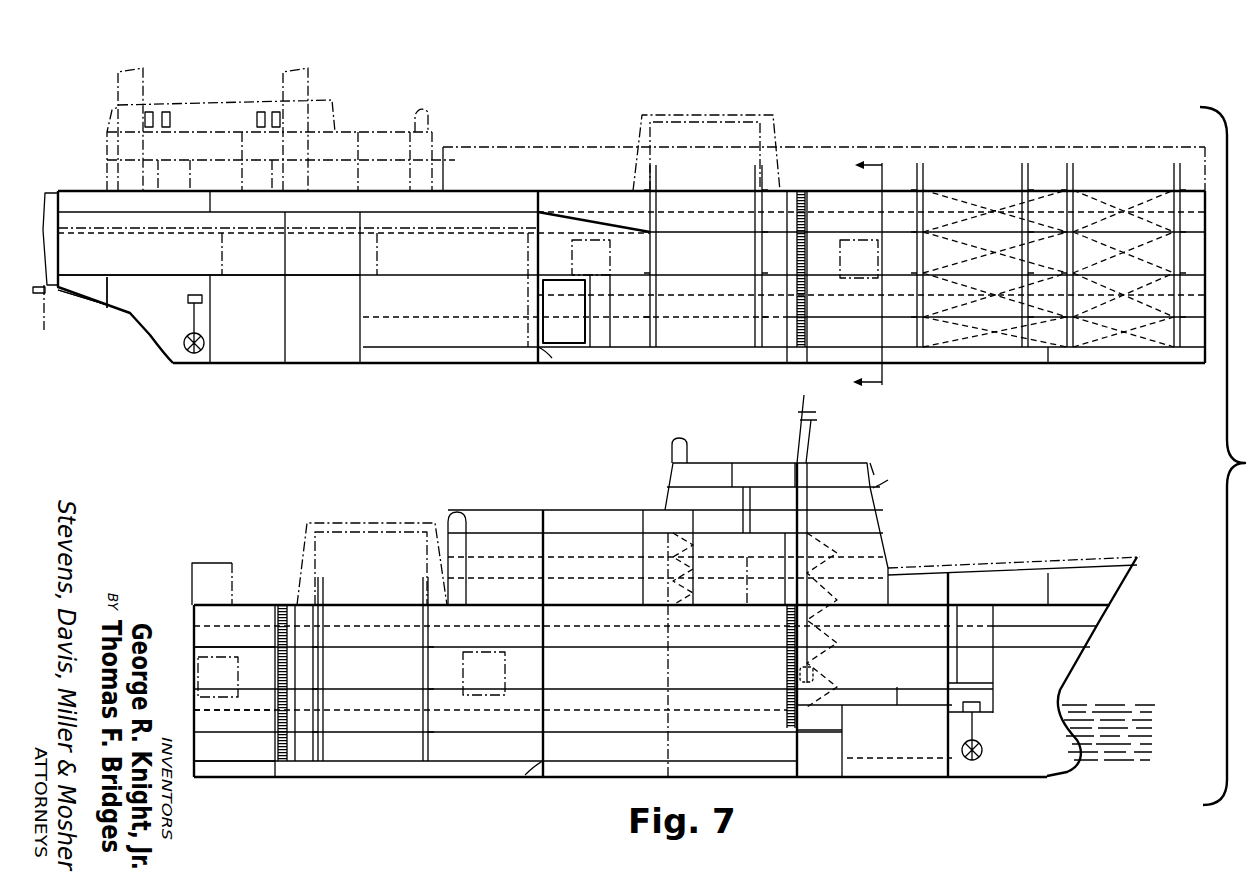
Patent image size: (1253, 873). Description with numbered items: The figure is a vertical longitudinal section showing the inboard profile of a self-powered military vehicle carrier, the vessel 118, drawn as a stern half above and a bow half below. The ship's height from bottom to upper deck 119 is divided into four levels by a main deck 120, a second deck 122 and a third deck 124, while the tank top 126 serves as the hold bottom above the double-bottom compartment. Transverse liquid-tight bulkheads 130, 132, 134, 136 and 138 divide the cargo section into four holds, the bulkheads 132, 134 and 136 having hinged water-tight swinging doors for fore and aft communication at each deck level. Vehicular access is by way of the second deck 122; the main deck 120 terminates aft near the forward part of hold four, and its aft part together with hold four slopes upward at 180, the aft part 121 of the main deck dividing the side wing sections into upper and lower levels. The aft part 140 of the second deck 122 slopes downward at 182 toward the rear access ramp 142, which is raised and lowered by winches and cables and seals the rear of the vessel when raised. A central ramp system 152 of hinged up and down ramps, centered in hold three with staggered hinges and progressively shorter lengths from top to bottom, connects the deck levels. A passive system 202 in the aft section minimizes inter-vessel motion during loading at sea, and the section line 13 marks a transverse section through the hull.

The section line 13- 13 is at (885, 274).
The vessel 118 is at (807, 132).
The upper deck 119 is at (255, 605).
The main deck 120 is at (217, 647).
The upper deck 121 is at (463, 207).
The second deck 122 is at (243, 687).
The third deck 124 is at (226, 735).
The tank top 126 is at (222, 767).
The transverse liquid-tight bulkhead 130 is at (795, 750).
The transverse liquid-tight bulkhead 132 is at (528, 774).
The transverse liquid-tight bulkhead 134 is at (280, 767).
The transverse liquid-tight bulkhead 136 is at (788, 356).
The transverse liquid-tight bulkhead 138 is at (550, 360).
The aft part of second deck 140 is at (135, 277).
The rear access ramp 142 is at (47, 305).
The central ramp system 152 is at (996, 184).
The slope of main deck 180 is at (570, 210).
The slope of second deck 182 is at (93, 292).
The passive system 202 is at (588, 351).